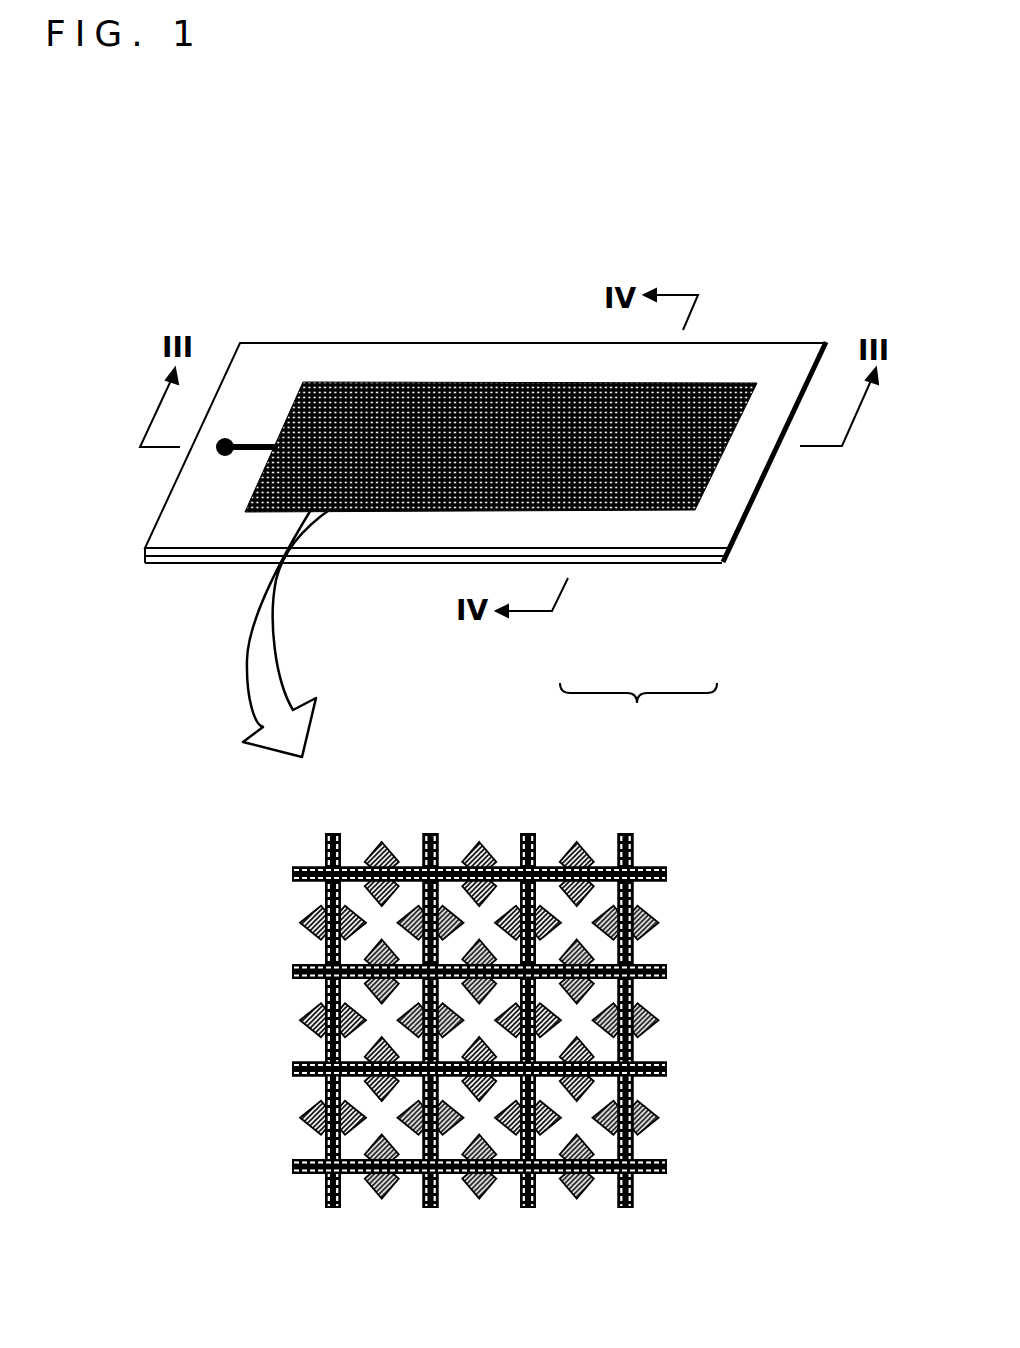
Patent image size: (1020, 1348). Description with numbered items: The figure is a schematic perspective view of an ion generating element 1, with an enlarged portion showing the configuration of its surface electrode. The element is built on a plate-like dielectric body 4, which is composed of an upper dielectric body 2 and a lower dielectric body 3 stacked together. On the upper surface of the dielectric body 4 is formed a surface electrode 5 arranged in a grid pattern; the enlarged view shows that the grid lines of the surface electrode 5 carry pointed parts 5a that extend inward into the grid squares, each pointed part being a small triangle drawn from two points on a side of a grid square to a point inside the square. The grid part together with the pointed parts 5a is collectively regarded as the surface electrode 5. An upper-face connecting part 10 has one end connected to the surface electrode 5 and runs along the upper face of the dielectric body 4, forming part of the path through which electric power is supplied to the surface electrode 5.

The ion generating element 1 is at (763, 252).
The upper dielectric body 2 is at (602, 550).
The lower dielectric body 3 is at (697, 550).
The dielectric body 4 is at (258, 1103).
The surface electrode 5 is at (395, 384).
The pointed parts 5a is at (493, 851).
The upper-face connecting part 10 is at (224, 438).